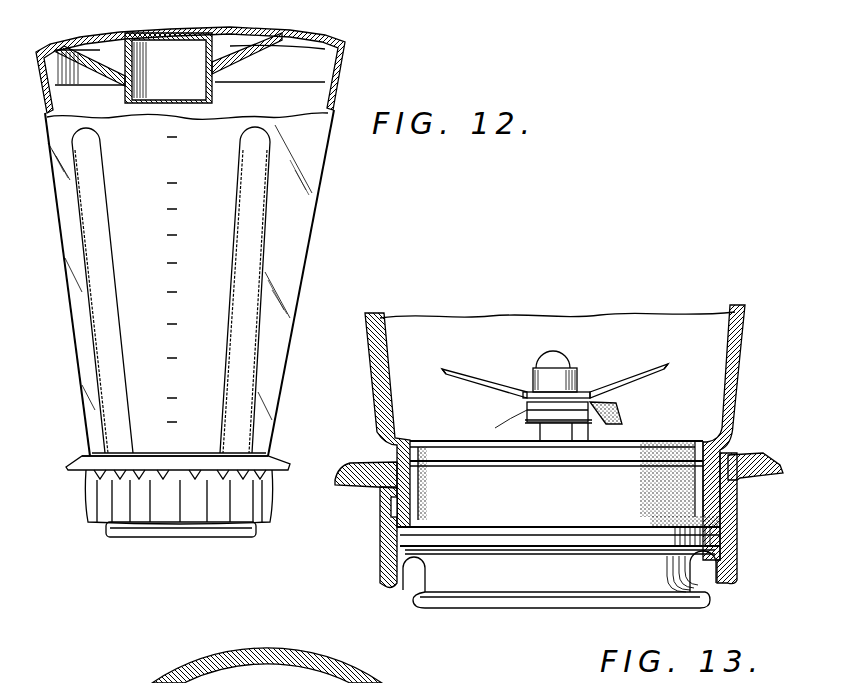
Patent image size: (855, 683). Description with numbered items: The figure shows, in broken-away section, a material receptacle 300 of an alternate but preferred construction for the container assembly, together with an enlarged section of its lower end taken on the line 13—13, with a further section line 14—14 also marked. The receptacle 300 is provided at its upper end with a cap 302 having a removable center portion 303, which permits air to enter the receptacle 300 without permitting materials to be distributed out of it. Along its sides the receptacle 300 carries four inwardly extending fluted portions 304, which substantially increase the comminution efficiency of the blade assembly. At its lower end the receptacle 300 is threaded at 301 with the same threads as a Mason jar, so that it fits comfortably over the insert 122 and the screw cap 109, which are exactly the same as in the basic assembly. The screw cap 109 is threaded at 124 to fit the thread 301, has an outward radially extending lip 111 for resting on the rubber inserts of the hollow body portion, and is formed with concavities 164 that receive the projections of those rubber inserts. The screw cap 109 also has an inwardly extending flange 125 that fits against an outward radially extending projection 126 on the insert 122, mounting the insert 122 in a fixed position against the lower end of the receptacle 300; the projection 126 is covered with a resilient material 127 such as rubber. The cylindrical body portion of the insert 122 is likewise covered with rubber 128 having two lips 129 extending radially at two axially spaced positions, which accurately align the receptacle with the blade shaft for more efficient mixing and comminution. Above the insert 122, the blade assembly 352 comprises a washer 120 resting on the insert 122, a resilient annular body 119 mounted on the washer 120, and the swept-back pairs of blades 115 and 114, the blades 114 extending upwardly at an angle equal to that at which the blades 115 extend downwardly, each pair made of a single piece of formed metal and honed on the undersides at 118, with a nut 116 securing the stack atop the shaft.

In FIG. 12, the receptacle 300 is at (320, 186).
In FIG. 13, the receptacle 300 is at (752, 312).
In FIG. 13, the threads 301 is at (730, 451).
In FIG. 12, the cap 302 is at (312, 38).
In FIG. 12, the removable center portion 303 is at (168, 33).
In FIG. 12, the fluted portions 304 is at (105, 337).
In FIG. 12, the screw cap 109 is at (278, 449).
In FIG. 13, the screw cap 109 is at (378, 540).
In FIG. 12, the lip 111 is at (90, 463).
In FIG. 13, the lip 111 is at (343, 485).
In FIG. 12, the concavities 164 is at (133, 506).
In FIG. 12, the section line 13— 13 is at (153, 437).
In FIG. 12, the section line 14— 14 is at (27, 228).
In FIG. 13, the pair of blades 114 is at (465, 378).
In FIG. 13, the pair of blades 115 is at (565, 410).
In FIG. 13, the nut 116 is at (551, 357).
In FIG. 13, the honed undersides 118 is at (445, 373).
In FIG. 13, the resilient annular body 119 is at (593, 407).
In FIG. 13, the washer 120 is at (592, 421).
In FIG. 13, the insert 122 is at (554, 550).
In FIG. 13, the threads 124 is at (390, 507).
In FIG. 13, the flange 125 is at (388, 573).
In FIG. 13, the projection 126 is at (483, 538).
In FIG. 13, the resilient material 127 is at (615, 527).
In FIG. 13, the rubber 128 is at (697, 492).
In FIG. 13, the lips 129 is at (483, 442).
In FIG. 13, the blade assembly 352 is at (595, 366).